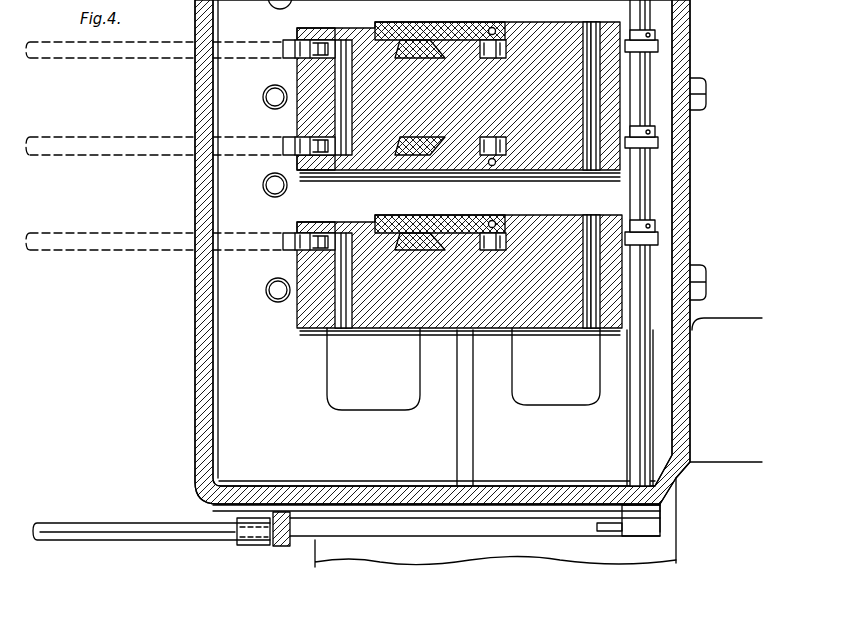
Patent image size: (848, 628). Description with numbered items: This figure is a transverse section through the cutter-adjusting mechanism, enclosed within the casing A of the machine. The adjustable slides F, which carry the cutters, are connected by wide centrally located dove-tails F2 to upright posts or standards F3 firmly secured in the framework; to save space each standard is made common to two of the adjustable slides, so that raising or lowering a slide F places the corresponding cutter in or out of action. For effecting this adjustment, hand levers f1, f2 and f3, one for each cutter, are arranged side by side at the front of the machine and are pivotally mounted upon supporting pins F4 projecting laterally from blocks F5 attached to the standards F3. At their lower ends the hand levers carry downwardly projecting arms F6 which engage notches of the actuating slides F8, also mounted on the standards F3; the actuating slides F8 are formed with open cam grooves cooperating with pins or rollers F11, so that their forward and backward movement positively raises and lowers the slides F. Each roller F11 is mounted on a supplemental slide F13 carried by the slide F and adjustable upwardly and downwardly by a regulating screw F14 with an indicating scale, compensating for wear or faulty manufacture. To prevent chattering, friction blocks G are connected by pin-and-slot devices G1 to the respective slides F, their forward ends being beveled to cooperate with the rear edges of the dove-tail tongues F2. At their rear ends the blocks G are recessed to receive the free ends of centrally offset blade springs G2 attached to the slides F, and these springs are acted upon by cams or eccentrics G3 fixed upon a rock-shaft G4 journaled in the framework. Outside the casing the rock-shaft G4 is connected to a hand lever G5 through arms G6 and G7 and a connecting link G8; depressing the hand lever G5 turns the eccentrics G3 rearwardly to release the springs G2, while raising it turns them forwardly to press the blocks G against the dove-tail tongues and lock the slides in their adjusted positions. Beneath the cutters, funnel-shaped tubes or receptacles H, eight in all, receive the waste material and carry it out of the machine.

The housing casing A is at (212, 390).
The adjustable slide F is at (541, 30).
The dove-tail F2 is at (435, 42).
The upright post or standard F3 is at (515, 88).
The supporting pin F4 is at (345, 172).
The block F5 is at (290, 118).
The downwardly projecting arm F6 is at (316, 40).
The actuating slide F8 is at (288, 52).
The pin or roller F11 is at (488, 58).
The supplemental slide F13 is at (493, 28).
The regulating screw F14 is at (490, 137).
The friction block G is at (633, 22).
The pin-and-slot device G1 is at (585, 56).
The blade spring G2 is at (598, 56).
The cam or eccentric G3 is at (649, 40).
The rock-shaft G4 is at (632, 422).
The hand lever G5 is at (200, 541).
The arm G6 is at (260, 537).
The arm G7 is at (632, 534).
The connecting link G8 is at (376, 537).
The funnel-shaped tube or receptacle H is at (266, 101).
The hand lever f1 is at (143, 251).
The hand lever f2 is at (144, 156).
The hand lever f3 is at (161, 58).